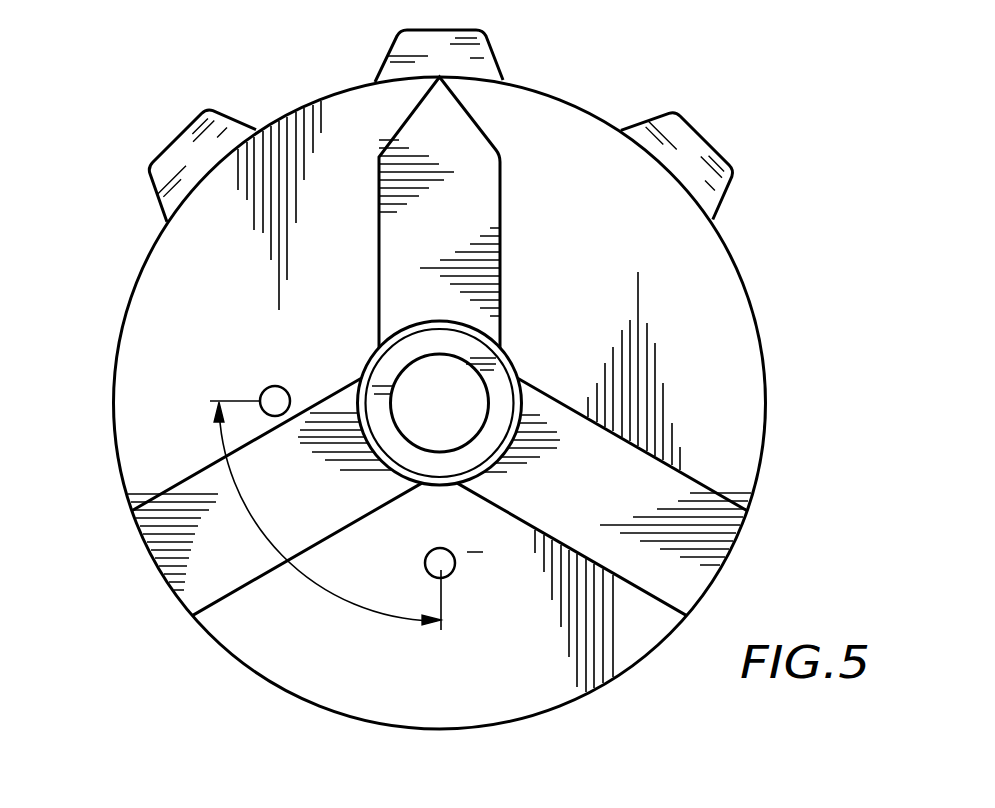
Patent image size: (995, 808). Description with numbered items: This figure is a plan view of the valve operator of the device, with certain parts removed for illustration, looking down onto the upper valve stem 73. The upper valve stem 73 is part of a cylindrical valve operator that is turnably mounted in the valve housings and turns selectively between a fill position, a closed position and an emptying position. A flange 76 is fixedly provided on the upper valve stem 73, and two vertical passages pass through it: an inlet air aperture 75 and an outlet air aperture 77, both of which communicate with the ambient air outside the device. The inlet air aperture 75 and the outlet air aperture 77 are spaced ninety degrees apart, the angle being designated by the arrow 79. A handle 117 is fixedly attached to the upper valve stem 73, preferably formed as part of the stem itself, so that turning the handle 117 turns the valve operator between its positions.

The upper valve stem 73 is at (408, 379).
The flange 76 is at (130, 426).
The handle 117 is at (493, 204).
The inlet air aperture 75 is at (273, 399).
The outlet air aperture 77 is at (446, 566).
The arrow 79 is at (259, 524).